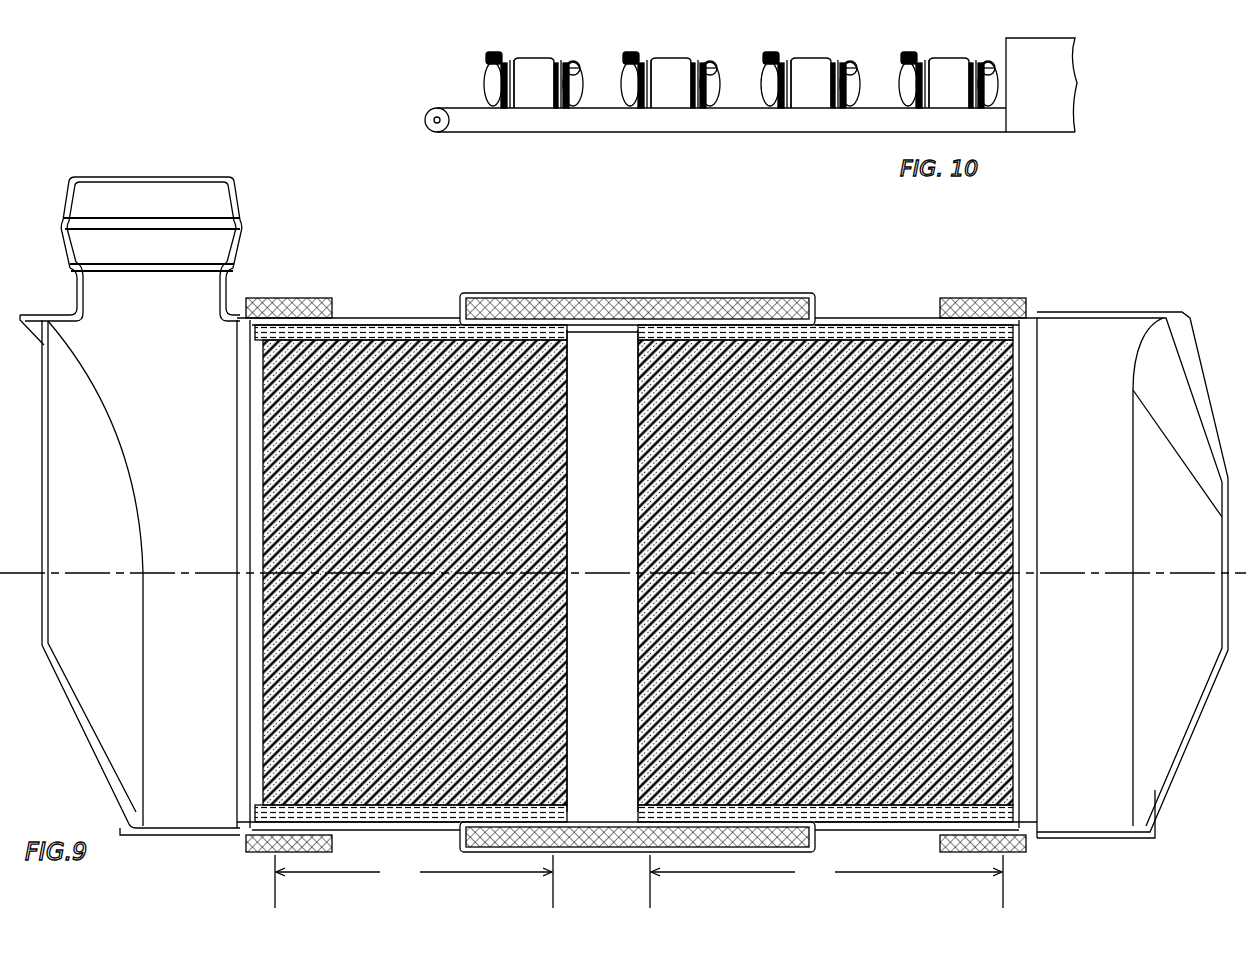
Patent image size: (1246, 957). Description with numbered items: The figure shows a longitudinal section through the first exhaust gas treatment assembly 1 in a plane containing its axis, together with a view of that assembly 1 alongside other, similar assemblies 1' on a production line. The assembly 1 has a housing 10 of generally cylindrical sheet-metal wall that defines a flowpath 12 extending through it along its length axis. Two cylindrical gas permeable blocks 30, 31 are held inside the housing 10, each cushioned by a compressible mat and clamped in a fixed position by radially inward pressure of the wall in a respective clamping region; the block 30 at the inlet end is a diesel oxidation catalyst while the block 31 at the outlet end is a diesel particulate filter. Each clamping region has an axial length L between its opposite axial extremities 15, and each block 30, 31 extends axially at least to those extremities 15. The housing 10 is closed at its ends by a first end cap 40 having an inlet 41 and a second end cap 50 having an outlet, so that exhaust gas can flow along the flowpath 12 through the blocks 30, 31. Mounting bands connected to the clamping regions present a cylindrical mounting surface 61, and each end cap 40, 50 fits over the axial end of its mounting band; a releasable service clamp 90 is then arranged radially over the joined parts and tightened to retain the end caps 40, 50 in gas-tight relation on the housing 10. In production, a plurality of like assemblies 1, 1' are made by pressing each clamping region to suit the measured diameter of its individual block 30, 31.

In FIG. 9, the first exhaust gas treatment assembly 1 is at (624, 531).
In FIG. 10, the like assembly 1' is at (741, 58).
In FIG. 9, the housing 10 is at (434, 250).
In FIG. 9, the flowpath 12 is at (222, 556).
In FIG. 9, the axial extremities 15 is at (276, 895).
In FIG. 9, the block 30 is at (568, 422).
In FIG. 9, the block 31 is at (638, 632).
In FIG. 9, the first end cap 40 is at (64, 690).
In FIG. 9, the inlet 41 is at (153, 203).
In FIG. 9, the second end cap 50 is at (1166, 772).
In FIG. 9, the mounting surface 61 is at (385, 322).
In FIG. 9, the releasable service clamp 90 is at (287, 298).